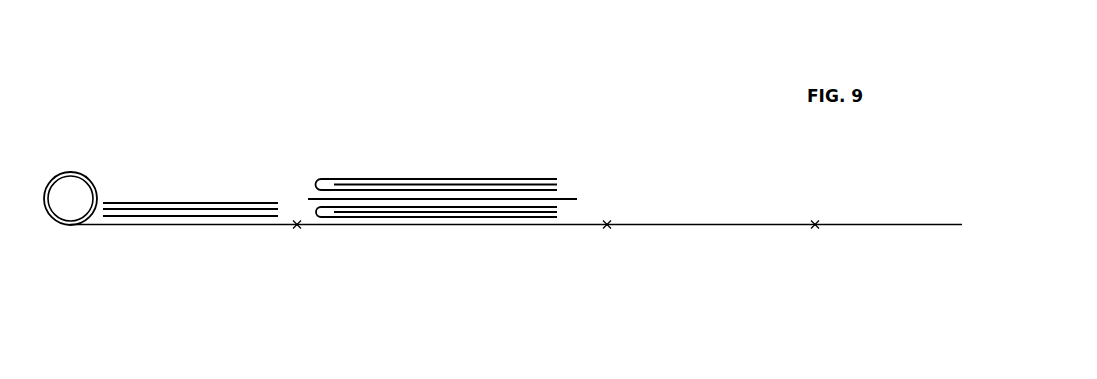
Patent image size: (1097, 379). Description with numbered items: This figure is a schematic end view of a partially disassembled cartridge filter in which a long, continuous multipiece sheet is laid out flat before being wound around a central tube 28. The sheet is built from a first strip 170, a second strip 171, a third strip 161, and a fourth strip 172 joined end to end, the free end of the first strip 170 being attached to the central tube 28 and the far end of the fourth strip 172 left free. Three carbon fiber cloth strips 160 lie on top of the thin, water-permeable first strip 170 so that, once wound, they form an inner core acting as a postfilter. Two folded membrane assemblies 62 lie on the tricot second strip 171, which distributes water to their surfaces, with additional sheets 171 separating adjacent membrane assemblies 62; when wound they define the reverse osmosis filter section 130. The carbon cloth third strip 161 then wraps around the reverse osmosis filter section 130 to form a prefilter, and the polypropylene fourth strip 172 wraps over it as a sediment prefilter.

The central tube 28 is at (67, 173).
The carbon fiber cloth strips 160 is at (118, 200).
The first strip 170 is at (203, 227).
The second strip 171 is at (313, 197).
The folded membrane assemblies 62 is at (488, 170).
The reverse osmosis filter section 130 is at (392, 112).
The third strip 161 is at (675, 224).
The fourth strip 172 is at (867, 230).